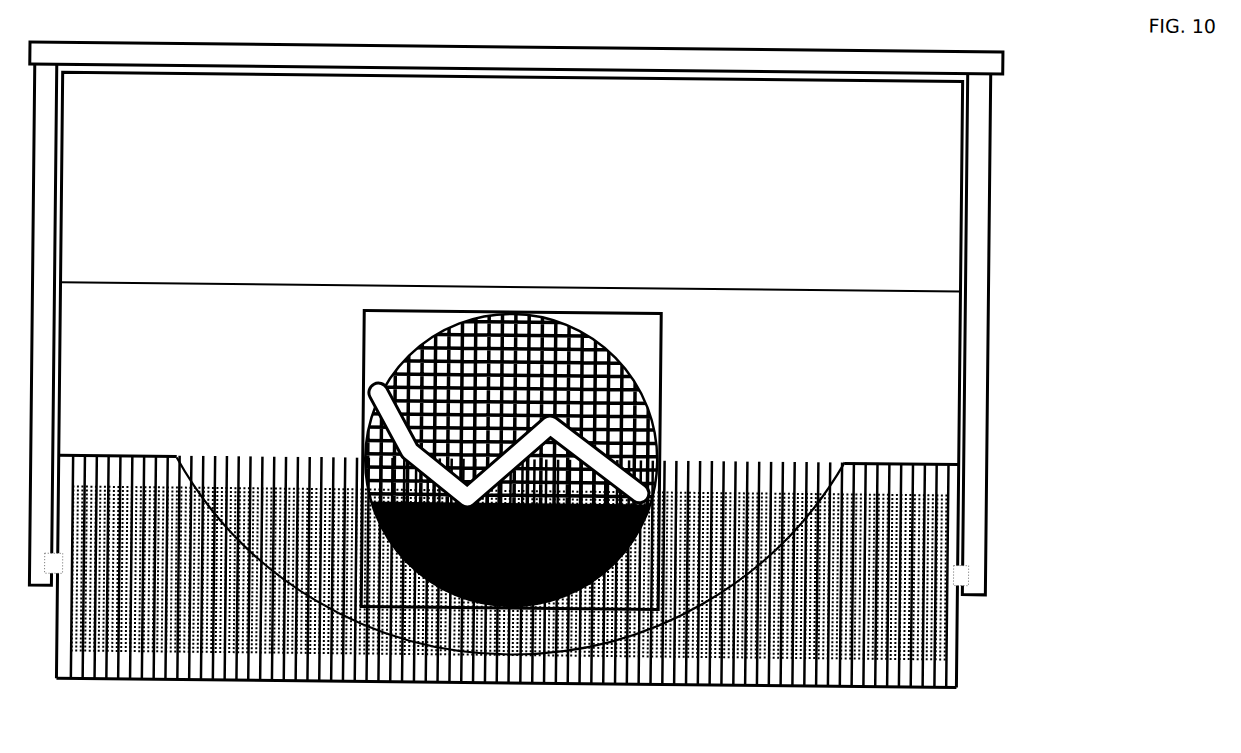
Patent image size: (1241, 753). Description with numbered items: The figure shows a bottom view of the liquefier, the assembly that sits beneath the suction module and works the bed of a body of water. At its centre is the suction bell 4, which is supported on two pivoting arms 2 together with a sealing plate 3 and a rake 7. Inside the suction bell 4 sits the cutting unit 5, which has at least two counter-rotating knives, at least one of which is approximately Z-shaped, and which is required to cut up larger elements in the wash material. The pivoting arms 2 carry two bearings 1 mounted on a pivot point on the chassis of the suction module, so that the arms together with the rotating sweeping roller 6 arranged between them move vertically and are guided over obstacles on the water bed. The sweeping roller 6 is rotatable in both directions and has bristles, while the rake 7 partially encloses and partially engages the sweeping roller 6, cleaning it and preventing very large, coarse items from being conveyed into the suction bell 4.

The bearing 1 is at (1003, 54).
The pivoting arm 2 is at (55, 132).
The sealing plate 3 is at (751, 163).
The suction bell 4 is at (913, 331).
The cutting unit 5 is at (669, 458).
The sweeping roller 6 is at (833, 500).
The rake 7 is at (954, 671).